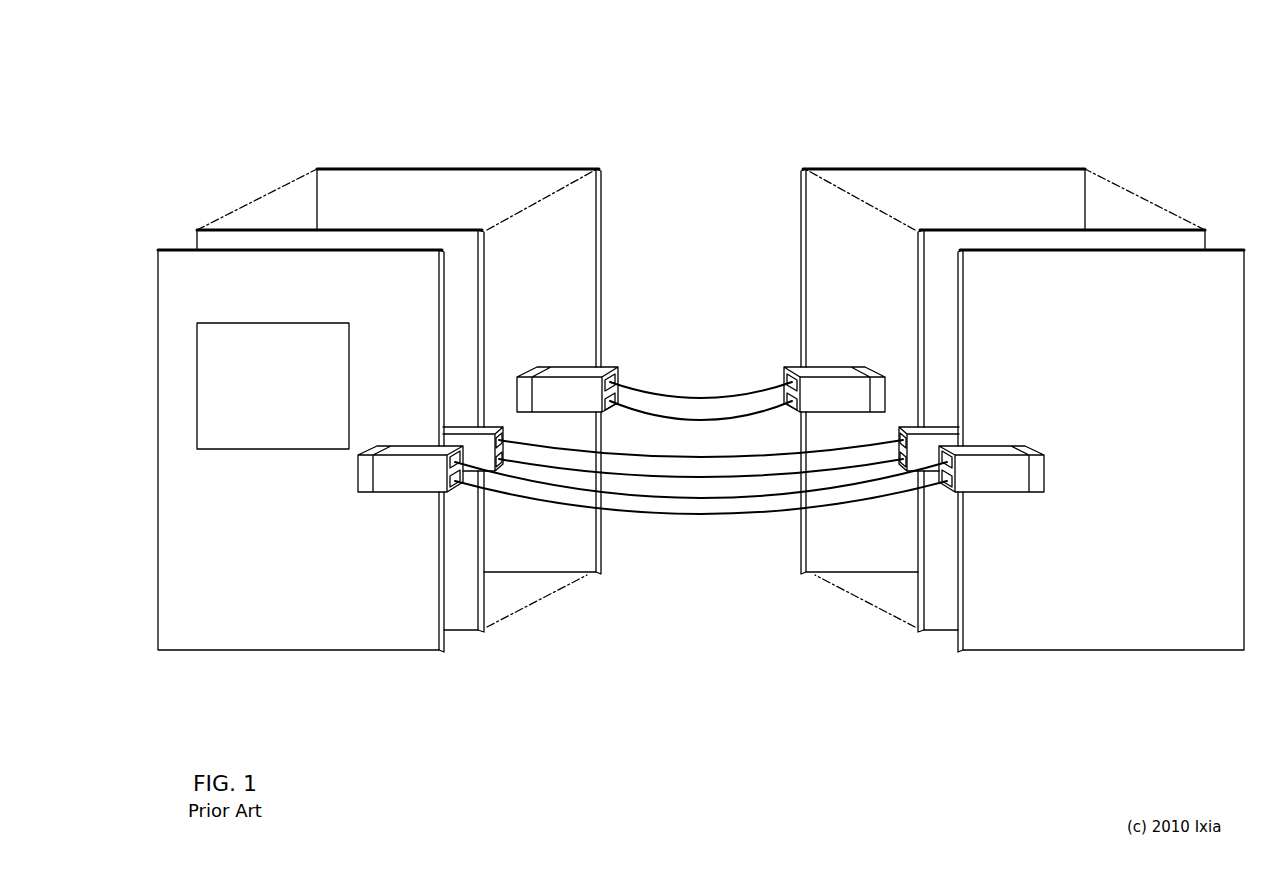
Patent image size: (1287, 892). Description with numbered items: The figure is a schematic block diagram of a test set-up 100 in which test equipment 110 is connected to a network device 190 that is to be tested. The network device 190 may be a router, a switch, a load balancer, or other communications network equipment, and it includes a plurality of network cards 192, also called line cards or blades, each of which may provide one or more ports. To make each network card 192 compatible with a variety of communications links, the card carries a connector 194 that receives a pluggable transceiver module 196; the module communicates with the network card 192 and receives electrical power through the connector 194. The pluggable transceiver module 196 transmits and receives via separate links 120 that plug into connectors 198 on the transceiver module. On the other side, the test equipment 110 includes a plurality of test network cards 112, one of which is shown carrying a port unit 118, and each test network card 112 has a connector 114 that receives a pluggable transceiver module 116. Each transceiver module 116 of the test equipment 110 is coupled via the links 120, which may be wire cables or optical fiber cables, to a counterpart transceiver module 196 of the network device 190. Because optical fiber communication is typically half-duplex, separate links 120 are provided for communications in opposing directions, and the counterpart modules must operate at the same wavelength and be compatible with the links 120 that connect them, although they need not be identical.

The test environment 100 is at (232, 62).
The test equipment 110 is at (613, 159).
The test network card 112 is at (312, 652).
The connector 114 is at (367, 492).
The pluggable transceiver module 116 is at (412, 492).
The port unit 118 is at (273, 386).
The links 120 is at (728, 498).
The network device 190 is at (1255, 159).
The network card 192 is at (1092, 652).
The connector 194 is at (1033, 492).
The pluggable transceiver module 196 is at (990, 492).
The connectors 198 is at (950, 483).